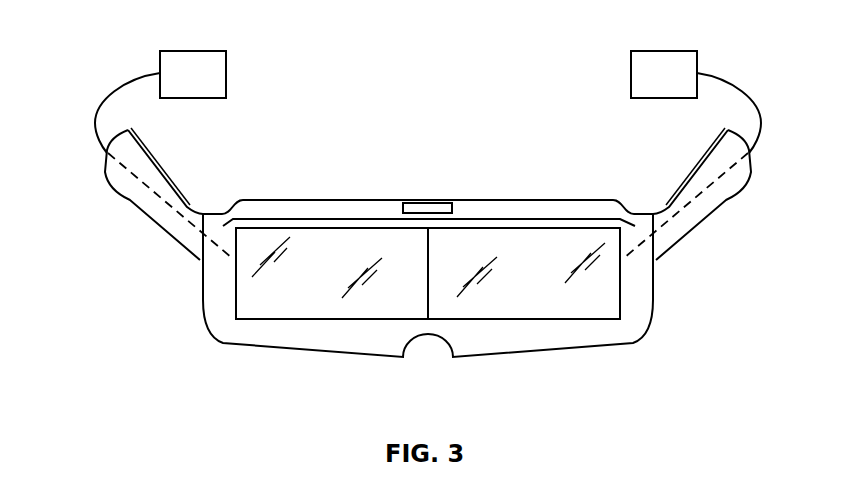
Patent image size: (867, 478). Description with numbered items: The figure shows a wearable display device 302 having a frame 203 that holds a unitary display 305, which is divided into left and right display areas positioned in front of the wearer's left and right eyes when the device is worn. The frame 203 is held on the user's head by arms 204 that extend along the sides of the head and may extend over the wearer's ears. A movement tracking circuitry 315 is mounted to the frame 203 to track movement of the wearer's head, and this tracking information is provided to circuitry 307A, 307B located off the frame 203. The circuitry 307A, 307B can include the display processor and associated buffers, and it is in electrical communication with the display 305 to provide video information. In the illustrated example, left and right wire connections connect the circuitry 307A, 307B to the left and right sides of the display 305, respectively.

The wearable display device 302 is at (596, 363).
The frame 203 is at (653, 307).
The arms 204 is at (137, 202).
The unitary display 305 is at (248, 290).
The movement tracking circuitry 315 is at (440, 203).
The circuitry 307A is at (192, 51).
The circuitry 307B is at (663, 51).